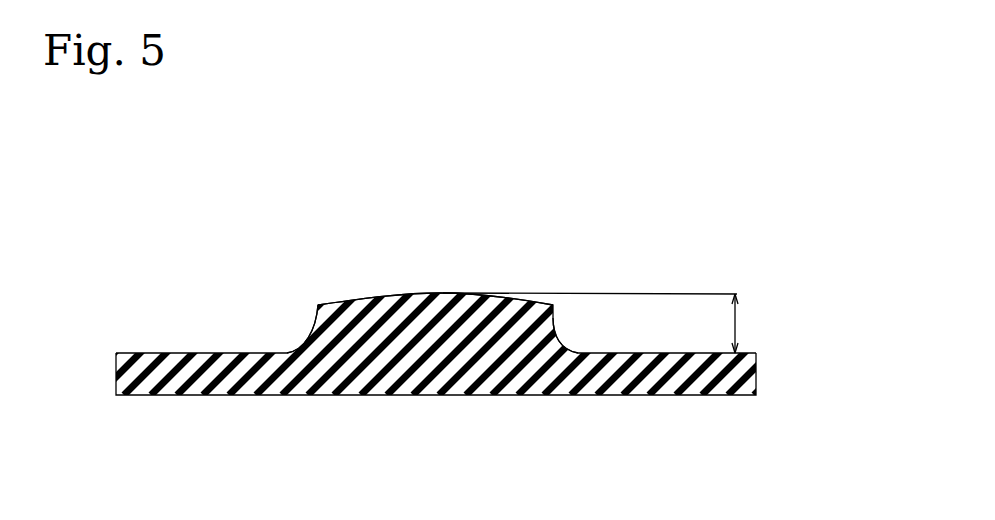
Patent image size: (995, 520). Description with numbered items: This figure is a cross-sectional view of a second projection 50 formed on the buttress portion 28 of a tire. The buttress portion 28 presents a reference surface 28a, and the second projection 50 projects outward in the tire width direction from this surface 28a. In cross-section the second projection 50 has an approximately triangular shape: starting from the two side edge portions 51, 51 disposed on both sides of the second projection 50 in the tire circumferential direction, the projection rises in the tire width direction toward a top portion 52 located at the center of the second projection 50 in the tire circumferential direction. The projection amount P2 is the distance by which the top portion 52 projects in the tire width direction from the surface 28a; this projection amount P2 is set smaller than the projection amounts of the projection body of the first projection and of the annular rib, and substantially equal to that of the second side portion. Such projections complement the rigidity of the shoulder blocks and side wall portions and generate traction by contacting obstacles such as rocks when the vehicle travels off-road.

The buttress portion 28 is at (147, 395).
The surface 28a is at (205, 353).
The second projection 50 is at (550, 232).
The side edge portions 51 is at (313, 322).
The top portion 52 is at (435, 291).
The projection amount P2 is at (604, 323).